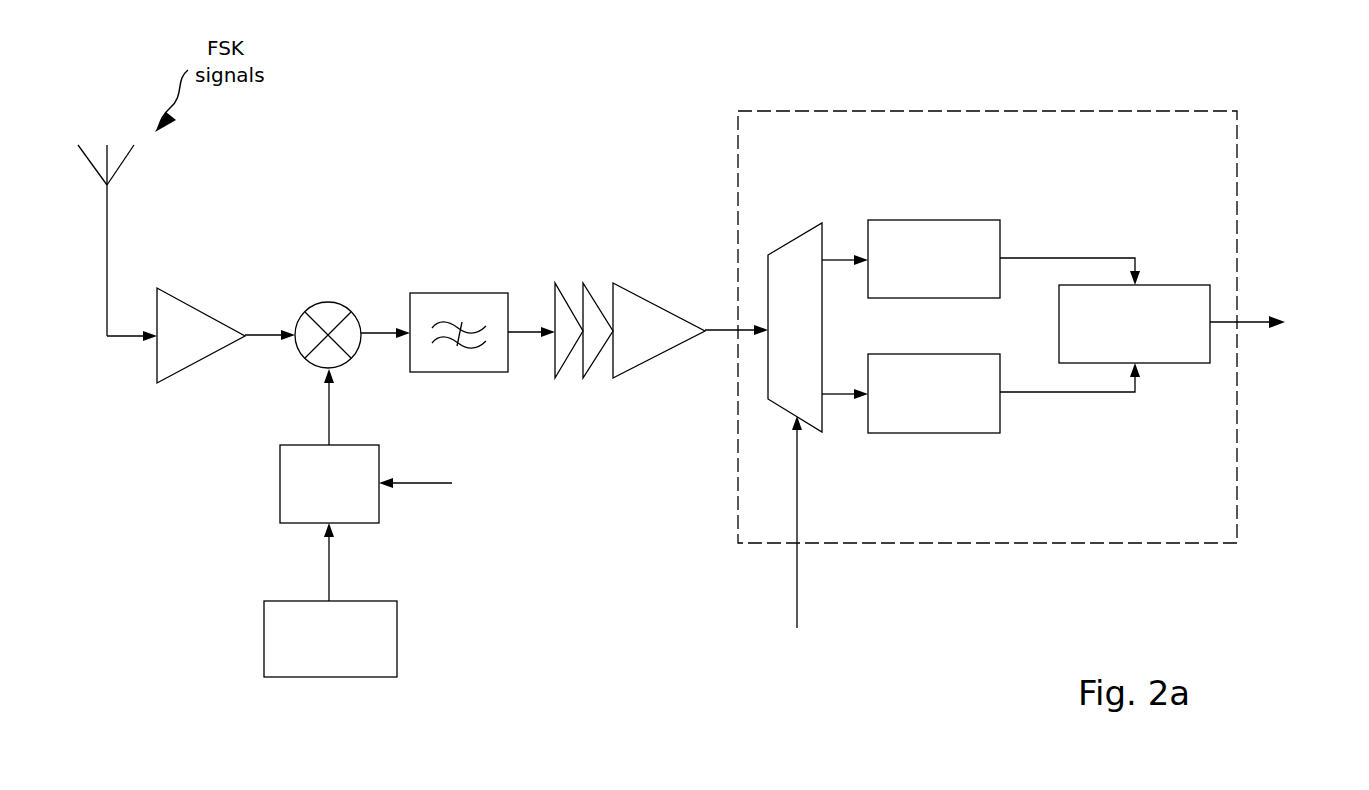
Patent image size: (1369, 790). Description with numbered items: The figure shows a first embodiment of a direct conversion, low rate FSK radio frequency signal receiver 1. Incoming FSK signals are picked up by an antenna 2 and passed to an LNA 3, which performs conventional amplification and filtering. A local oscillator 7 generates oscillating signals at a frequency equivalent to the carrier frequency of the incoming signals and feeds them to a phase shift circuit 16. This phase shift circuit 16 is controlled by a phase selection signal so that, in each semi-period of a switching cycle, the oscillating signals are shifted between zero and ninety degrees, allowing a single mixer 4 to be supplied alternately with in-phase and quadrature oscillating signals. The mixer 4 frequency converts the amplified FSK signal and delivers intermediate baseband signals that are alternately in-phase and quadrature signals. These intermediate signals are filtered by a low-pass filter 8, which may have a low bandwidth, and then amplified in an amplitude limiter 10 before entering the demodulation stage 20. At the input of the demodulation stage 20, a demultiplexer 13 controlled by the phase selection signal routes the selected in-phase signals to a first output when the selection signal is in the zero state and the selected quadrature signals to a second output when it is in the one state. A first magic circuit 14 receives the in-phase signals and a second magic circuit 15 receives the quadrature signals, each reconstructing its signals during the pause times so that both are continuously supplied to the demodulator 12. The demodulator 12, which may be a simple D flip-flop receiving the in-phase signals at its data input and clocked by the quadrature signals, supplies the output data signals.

The FSK radio frequency signal receiver 1 is at (680, 148).
The FSK radio frequency signal receiver antenna 2 is at (107, 238).
The LNA 3 is at (199, 318).
The mixer 4 is at (332, 305).
The local oscillator 7 is at (275, 610).
The low-pass filter 8 is at (458, 302).
The amplitude limiter 10 is at (645, 318).
The demodulator 12 is at (1194, 294).
The demultiplexer 13 is at (777, 248).
The first magic circuit 14 is at (985, 232).
The second magic circuit 15 is at (978, 433).
The phase shift circuit 16 is at (291, 456).
The demodulation stage 20 is at (1135, 120).